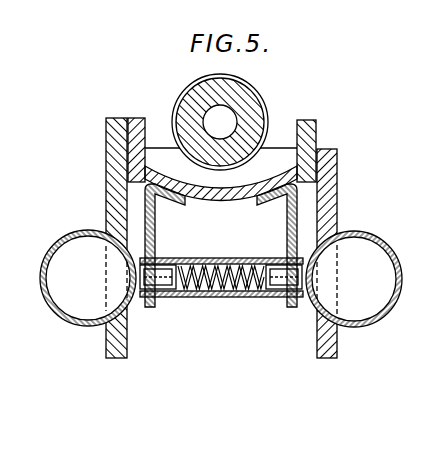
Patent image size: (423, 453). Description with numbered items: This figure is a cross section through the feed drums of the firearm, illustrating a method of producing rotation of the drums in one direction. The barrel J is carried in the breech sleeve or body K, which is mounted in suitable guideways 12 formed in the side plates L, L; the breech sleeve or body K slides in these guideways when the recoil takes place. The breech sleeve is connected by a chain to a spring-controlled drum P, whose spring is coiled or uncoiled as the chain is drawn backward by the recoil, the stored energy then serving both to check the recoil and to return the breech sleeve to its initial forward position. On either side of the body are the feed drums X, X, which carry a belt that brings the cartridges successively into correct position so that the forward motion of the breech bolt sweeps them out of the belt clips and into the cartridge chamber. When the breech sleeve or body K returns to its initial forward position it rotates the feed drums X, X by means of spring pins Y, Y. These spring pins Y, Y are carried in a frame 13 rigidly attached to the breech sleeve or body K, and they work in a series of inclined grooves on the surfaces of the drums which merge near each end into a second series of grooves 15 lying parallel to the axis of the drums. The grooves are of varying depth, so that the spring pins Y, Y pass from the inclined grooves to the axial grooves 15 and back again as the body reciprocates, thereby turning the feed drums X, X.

The barrel J is at (200, 92).
The drum P is at (0, 148).
The guideways 12 is at (125, 132).
The side plates L is at (112, 167).
The breech sleeve or body K is at (238, 192).
The frame 13 is at (154, 222).
The feed drums X is at (63, 246).
The spring pins Y is at (164, 281).
The axial grooves 15 is at (70, 318).